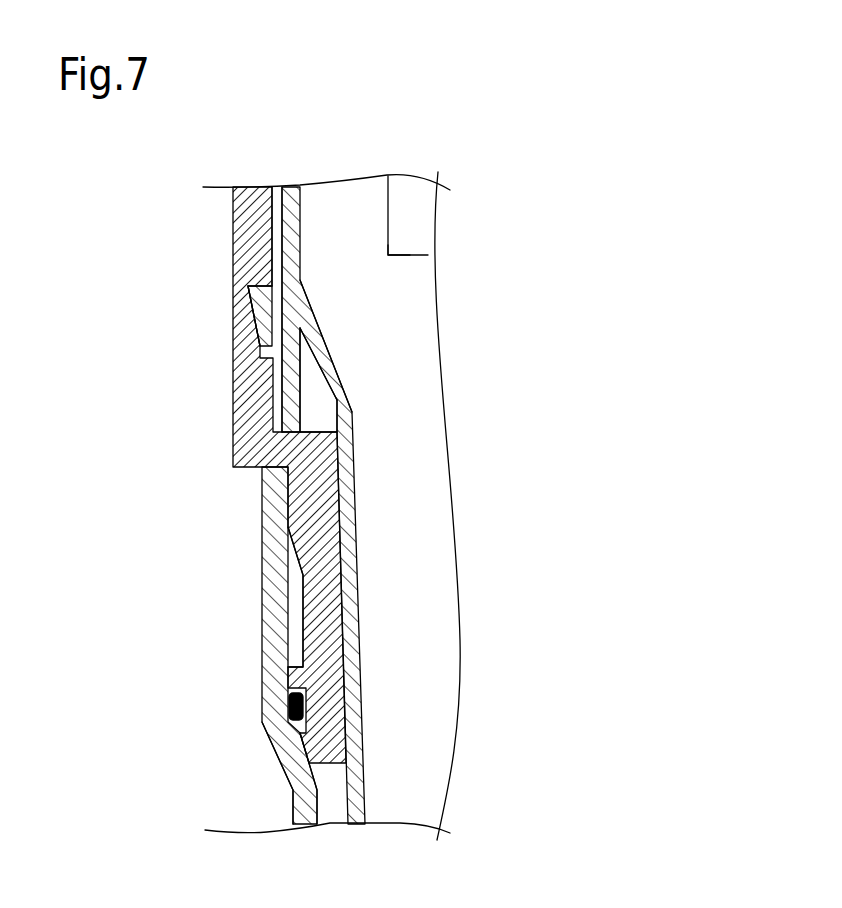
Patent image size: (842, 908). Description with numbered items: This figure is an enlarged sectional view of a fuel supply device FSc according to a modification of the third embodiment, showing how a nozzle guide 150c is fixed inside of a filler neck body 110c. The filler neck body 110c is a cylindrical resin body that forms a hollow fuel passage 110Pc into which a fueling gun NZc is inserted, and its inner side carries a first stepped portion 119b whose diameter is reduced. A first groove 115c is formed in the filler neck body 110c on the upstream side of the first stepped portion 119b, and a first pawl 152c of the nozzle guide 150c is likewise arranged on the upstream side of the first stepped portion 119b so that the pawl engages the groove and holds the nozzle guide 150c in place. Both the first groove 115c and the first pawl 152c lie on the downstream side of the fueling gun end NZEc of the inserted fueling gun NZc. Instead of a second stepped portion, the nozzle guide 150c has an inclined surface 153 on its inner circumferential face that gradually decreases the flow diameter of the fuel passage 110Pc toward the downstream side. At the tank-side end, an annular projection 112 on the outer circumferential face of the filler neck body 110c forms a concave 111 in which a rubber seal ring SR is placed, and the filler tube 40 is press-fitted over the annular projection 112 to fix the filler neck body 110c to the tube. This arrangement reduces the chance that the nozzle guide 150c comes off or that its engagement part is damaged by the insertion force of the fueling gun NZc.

The fuel passage 110Pc is at (343, 262).
The filler neck body 110c is at (248, 287).
The first groove 115c is at (250, 337).
The first pawl 152c is at (270, 353).
The inclined surface 153 is at (332, 372).
The first stepped portion 119b is at (318, 430).
The nozzle guide 150c is at (353, 460).
The fueling gun NZc is at (410, 222).
The fueling gun end NZEc is at (403, 256).
The fuel supply device FSc is at (619, 187).
The annular projection 112 is at (300, 565).
The filler tube 40 is at (262, 598).
The seal ring SR is at (287, 700).
The concave 111 is at (300, 750).